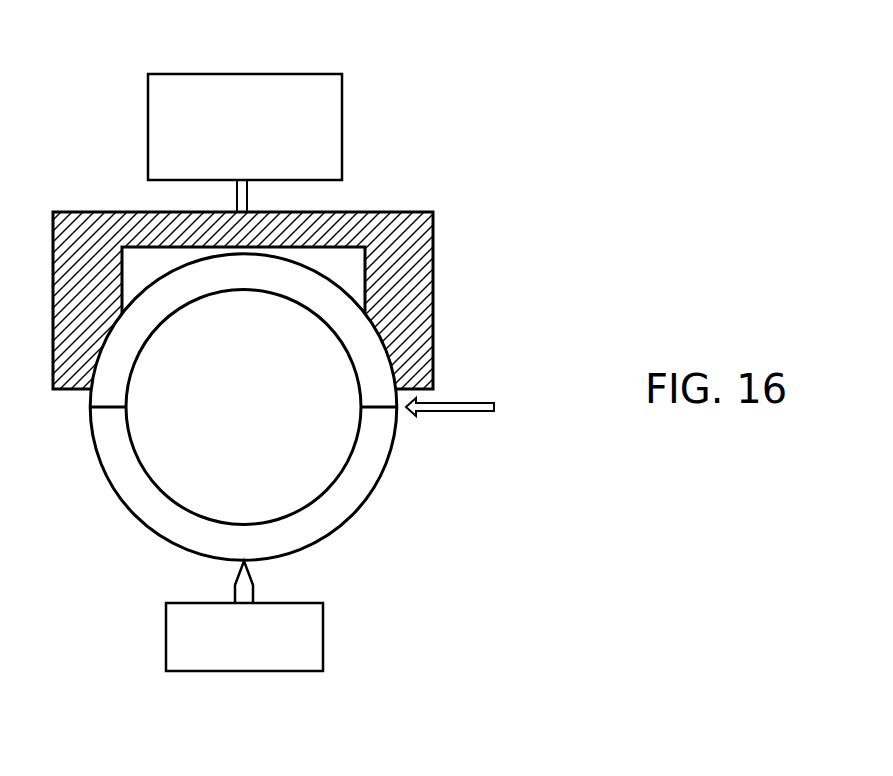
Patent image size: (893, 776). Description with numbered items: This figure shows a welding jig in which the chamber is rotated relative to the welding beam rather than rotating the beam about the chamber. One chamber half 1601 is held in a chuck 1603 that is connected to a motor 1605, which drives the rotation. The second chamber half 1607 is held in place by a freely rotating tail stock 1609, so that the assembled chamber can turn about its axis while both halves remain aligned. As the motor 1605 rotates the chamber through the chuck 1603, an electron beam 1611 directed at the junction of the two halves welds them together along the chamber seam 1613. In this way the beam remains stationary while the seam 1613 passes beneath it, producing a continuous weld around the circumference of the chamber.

The chamber half 1601 is at (277, 280).
The chuck 1603 is at (402, 233).
The motor 1605 is at (343, 113).
The second chamber half 1607 is at (225, 533).
The freely rotating tail stock 1609 is at (277, 648).
The electron beam 1611 is at (459, 413).
The chamber seam 1613 is at (380, 405).